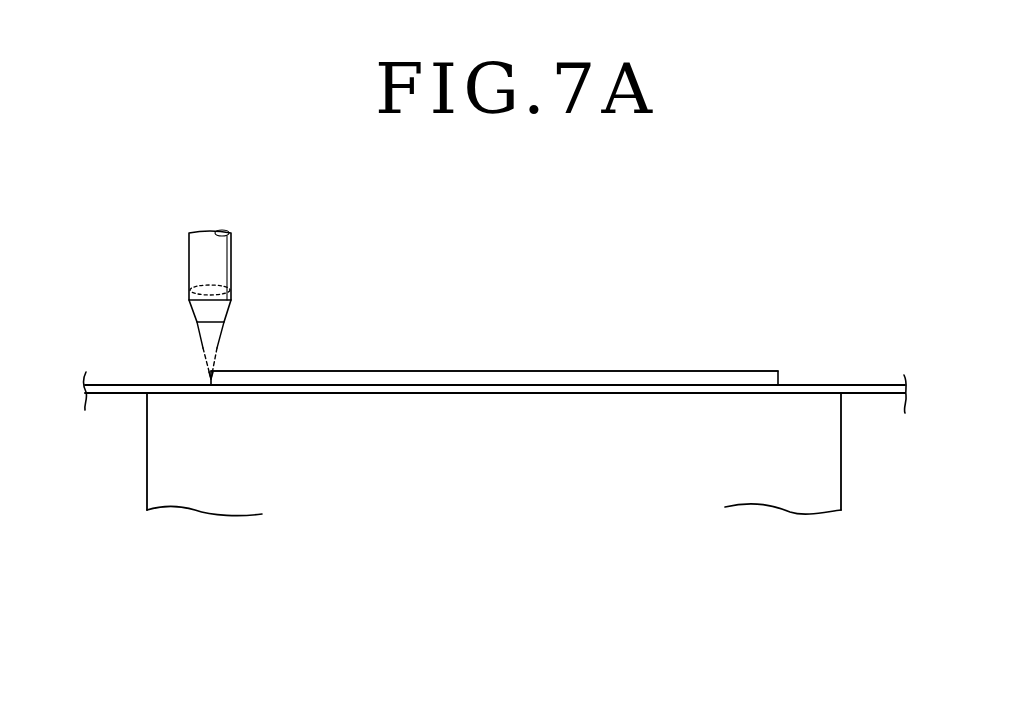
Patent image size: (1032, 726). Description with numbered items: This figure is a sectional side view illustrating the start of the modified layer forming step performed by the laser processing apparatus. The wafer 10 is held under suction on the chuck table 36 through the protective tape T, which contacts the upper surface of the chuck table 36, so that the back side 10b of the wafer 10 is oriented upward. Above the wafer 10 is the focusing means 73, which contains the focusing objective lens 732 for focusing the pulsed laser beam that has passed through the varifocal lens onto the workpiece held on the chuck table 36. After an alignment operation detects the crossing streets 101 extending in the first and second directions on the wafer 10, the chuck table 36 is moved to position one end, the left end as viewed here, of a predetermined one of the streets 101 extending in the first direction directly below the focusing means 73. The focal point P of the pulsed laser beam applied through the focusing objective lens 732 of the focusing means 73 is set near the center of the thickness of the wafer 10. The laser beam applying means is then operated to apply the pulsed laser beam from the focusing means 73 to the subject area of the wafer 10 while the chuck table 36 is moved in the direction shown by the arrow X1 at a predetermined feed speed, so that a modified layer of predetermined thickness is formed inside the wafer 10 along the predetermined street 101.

The focusing means 73 is at (185, 244).
The focusing objective lens 732 is at (191, 279).
The wafer 10 is at (660, 368).
The back side of the wafer 10b is at (548, 369).
The street 101 is at (782, 382).
The chuck table 36 is at (157, 468).
The focal point P is at (210, 382).
The protective tape T is at (113, 384).
The direction of chuck table movement X1 is at (560, 547).